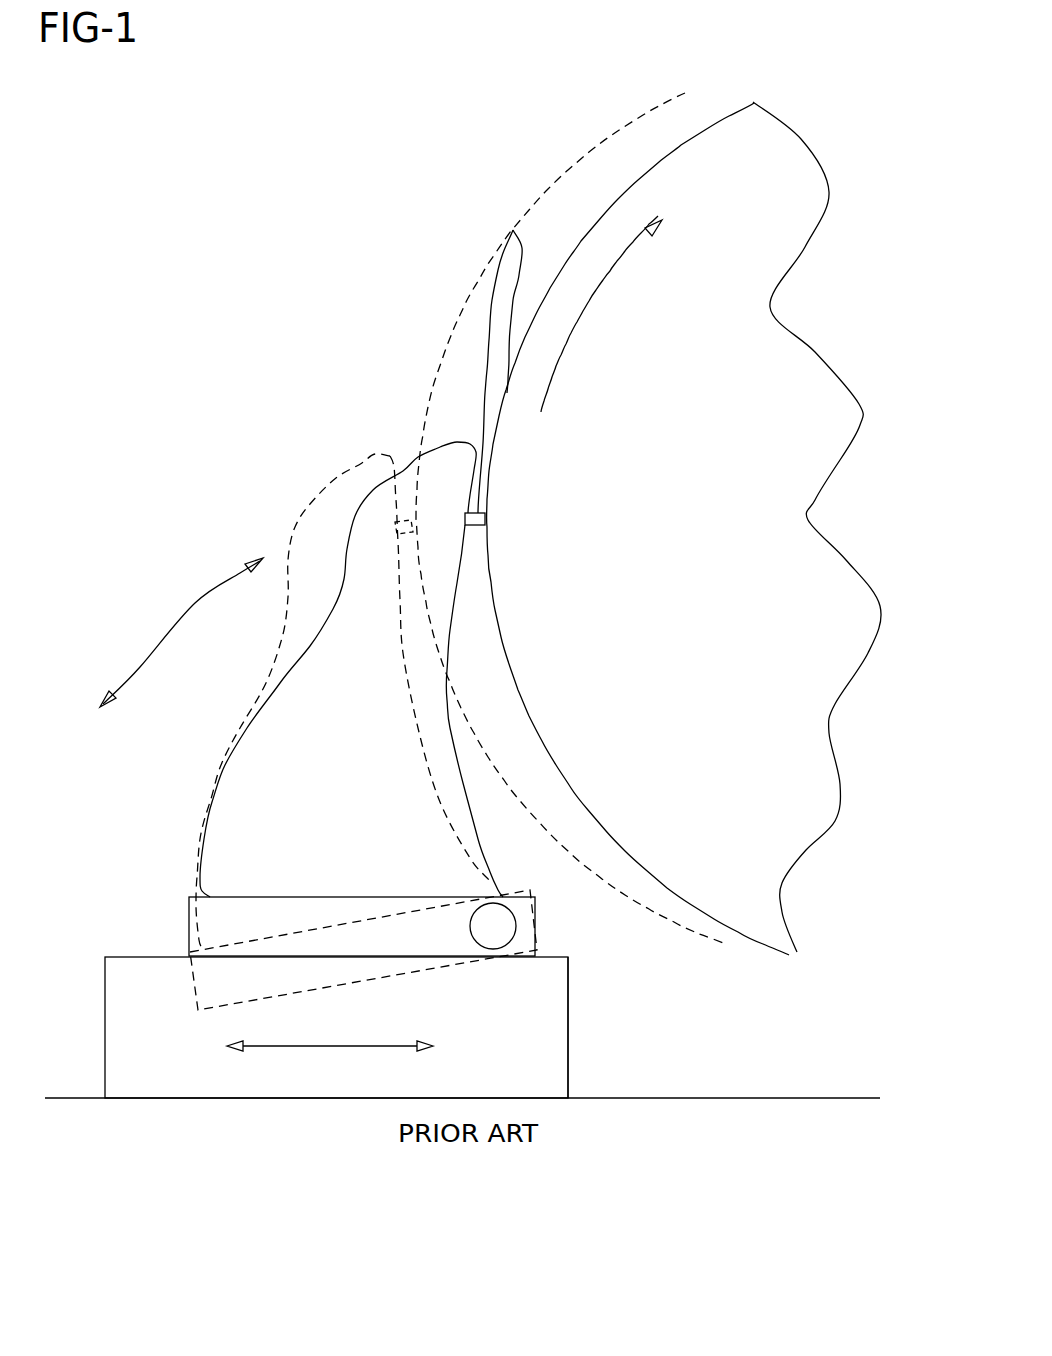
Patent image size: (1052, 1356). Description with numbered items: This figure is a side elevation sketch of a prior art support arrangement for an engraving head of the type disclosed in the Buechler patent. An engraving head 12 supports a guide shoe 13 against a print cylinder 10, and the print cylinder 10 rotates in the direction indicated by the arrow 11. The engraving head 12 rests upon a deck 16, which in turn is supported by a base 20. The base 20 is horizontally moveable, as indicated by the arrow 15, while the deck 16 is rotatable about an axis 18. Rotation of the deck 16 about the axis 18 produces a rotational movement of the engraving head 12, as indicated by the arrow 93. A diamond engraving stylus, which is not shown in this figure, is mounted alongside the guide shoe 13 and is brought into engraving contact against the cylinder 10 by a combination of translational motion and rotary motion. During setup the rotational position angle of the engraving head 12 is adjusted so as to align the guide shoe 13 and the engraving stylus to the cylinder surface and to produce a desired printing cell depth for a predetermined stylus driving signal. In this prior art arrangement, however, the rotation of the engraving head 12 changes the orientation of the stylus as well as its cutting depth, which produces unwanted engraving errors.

The print cylinder 10 is at (727, 540).
The arrow 11 is at (597, 305).
The engraving head 12 is at (438, 447).
The guide shoe 13 is at (510, 230).
The arrow 15 is at (330, 1046).
The deck 16 is at (238, 920).
The axis 18 is at (516, 926).
The base 20 is at (570, 1037).
The arrow 93 is at (195, 603).